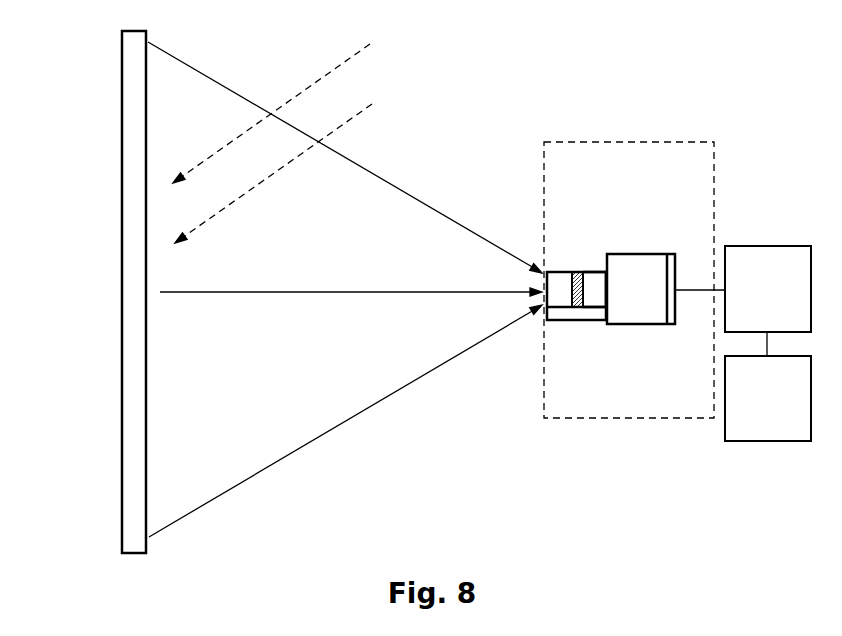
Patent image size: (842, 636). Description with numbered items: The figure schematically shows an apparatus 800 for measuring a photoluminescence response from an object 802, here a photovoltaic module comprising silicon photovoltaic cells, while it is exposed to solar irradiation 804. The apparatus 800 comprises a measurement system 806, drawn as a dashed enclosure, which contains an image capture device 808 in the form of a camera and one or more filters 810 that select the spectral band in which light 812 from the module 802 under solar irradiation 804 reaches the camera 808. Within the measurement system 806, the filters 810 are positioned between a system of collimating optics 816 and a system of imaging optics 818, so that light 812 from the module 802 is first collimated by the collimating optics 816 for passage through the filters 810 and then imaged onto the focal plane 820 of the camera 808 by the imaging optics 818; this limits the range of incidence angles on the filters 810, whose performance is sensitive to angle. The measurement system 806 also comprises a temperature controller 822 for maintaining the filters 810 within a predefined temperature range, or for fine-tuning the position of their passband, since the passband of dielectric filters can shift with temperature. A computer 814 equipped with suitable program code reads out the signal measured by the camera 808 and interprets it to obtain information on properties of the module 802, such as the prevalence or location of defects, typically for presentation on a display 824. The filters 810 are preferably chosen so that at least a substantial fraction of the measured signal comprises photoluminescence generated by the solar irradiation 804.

The apparatus 800 is at (695, 125).
The object 802 is at (122, 177).
The solar irradiation 804 is at (350, 57).
The measurement system 806 is at (590, 420).
The image capture device 808 is at (640, 325).
The filters 810 is at (577, 271).
The light 812 is at (345, 422).
The computer 814 is at (768, 289).
The system of collimating optics 816 is at (553, 271).
The system of imaging optics 818 is at (592, 272).
The focal plane 820 is at (667, 254).
The temperature controller 822 is at (573, 323).
The display 824 is at (768, 398).